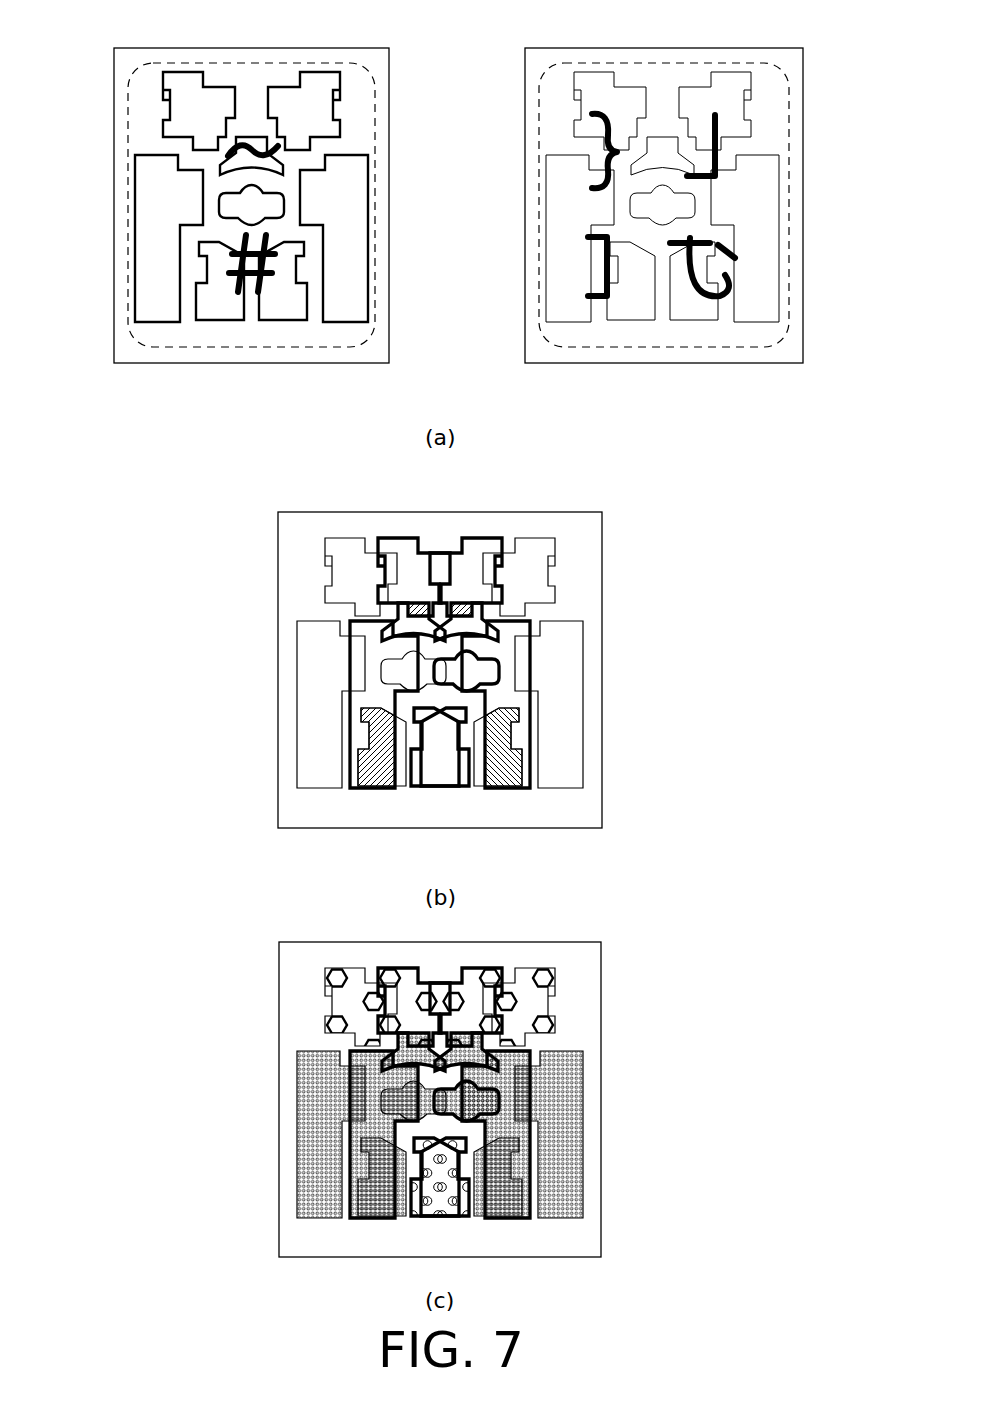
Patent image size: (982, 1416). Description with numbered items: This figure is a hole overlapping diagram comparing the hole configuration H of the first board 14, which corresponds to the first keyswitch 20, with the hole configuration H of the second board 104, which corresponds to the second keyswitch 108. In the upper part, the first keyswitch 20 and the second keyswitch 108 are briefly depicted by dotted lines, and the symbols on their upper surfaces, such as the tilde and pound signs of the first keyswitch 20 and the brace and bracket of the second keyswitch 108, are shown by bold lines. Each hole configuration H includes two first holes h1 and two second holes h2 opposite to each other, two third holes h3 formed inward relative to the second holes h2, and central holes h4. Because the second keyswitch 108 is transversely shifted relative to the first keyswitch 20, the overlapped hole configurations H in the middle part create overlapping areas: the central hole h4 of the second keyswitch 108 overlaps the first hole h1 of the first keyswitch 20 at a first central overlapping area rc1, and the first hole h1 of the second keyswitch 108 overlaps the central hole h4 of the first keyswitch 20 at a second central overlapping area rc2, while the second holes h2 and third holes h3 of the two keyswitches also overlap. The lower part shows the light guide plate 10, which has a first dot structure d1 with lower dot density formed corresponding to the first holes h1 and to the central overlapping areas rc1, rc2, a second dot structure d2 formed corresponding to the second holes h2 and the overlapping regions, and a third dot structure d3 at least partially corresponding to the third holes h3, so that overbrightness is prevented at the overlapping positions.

The hole configuration H is at (167, 70).
The first hole h1 is at (226, 87).
The second hole h2 is at (155, 322).
The third hole h3 is at (218, 320).
The central hole h4 is at (222, 205).
The first board 14 is at (114, 85).
The first keyswitch 20 is at (333, 63).
The second board 104 is at (803, 85).
The second keyswitch 108 is at (744, 63).
The first central overlapping area rc1 is at (418, 600).
The second central overlapping area rc2 is at (462, 600).
The first dot structure d1 is at (507, 1002).
The second dot structure d2 is at (567, 1145).
The third dot structure d3 is at (440, 1195).
The light guide plate 10 is at (279, 1097).